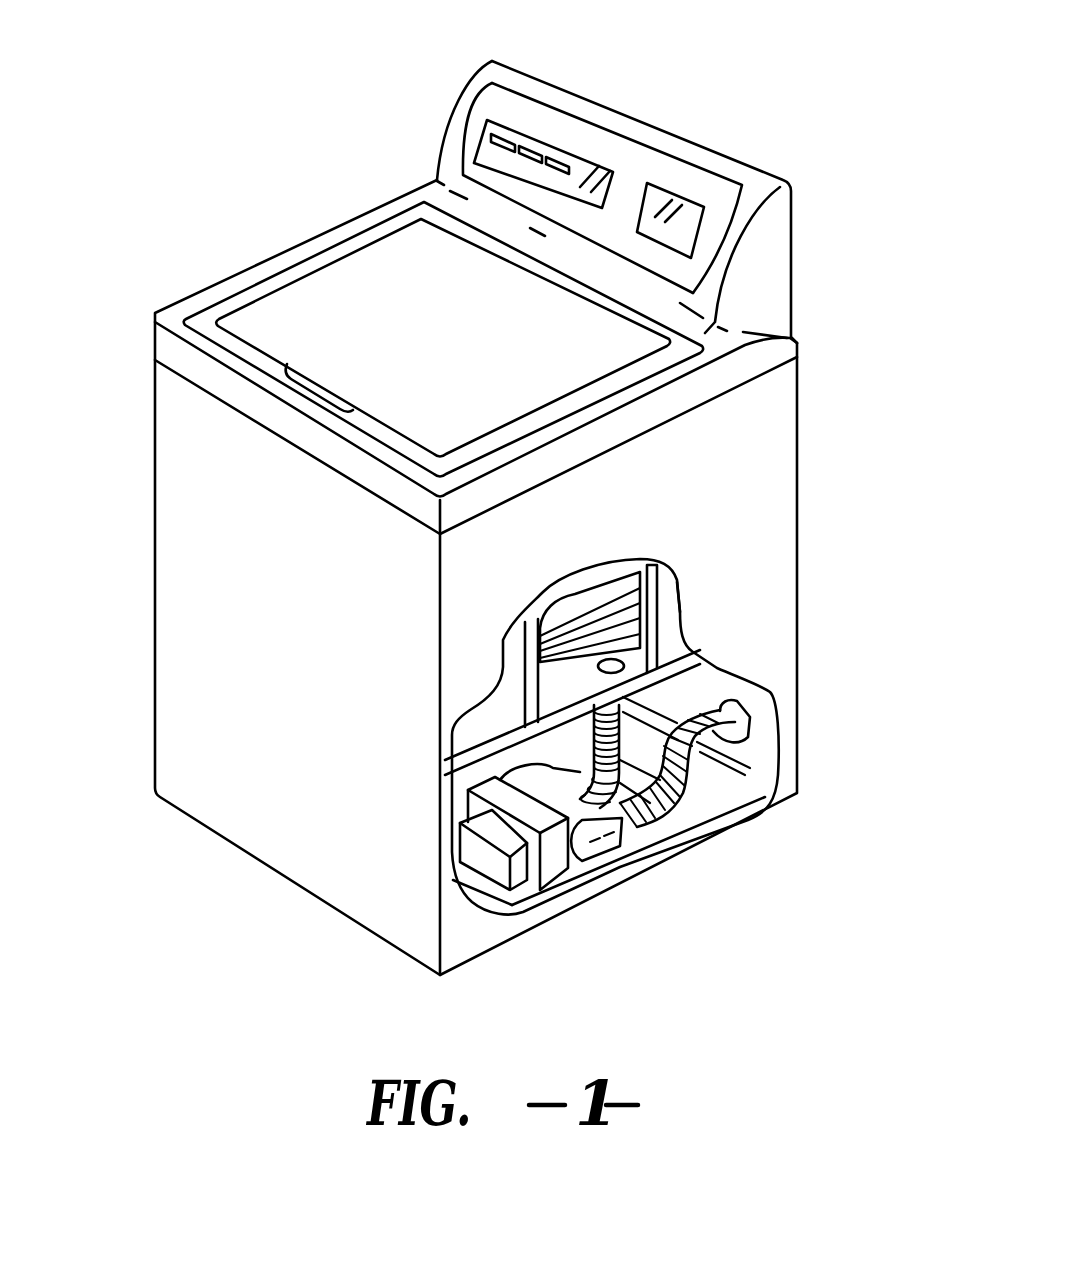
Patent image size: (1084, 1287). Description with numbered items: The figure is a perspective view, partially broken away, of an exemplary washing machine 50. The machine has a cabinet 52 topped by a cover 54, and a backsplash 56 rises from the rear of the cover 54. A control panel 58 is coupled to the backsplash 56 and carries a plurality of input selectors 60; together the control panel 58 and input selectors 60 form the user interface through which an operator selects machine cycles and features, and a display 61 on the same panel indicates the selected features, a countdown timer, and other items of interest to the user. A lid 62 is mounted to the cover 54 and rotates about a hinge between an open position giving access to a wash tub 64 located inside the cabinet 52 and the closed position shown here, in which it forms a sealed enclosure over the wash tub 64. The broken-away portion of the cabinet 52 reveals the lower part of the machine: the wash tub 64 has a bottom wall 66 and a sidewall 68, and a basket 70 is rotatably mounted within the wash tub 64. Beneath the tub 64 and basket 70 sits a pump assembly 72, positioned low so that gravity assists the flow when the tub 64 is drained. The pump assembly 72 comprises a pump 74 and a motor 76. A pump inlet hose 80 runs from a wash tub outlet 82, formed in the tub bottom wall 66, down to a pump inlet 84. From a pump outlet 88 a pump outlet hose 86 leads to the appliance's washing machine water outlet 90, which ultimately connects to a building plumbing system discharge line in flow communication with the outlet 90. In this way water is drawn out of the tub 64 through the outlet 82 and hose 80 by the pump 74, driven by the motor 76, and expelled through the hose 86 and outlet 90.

The washing machine 50 is at (832, 424).
The cabinet 52 is at (778, 547).
The cover 54 is at (247, 292).
The backsplash 56 is at (637, 168).
The control panel 58 is at (593, 153).
The input selectors 60 is at (501, 136).
The display 61 is at (690, 208).
The lid 62 is at (403, 263).
The wash tub 64 is at (580, 591).
The bottom wall 66 is at (577, 668).
The sidewall 68 is at (661, 592).
The basket 70 is at (655, 566).
The pump assembly 72 is at (482, 879).
The pump 74 is at (497, 790).
The motor 76 is at (488, 833).
The pump inlet hose 80 is at (503, 690).
The wash tub outlet 82 is at (620, 658).
The pump inlet 84 is at (590, 785).
The pump outlet hose 86 is at (760, 770).
The pump outlet 88 is at (641, 850).
The washing machine water outlet 90 is at (745, 708).